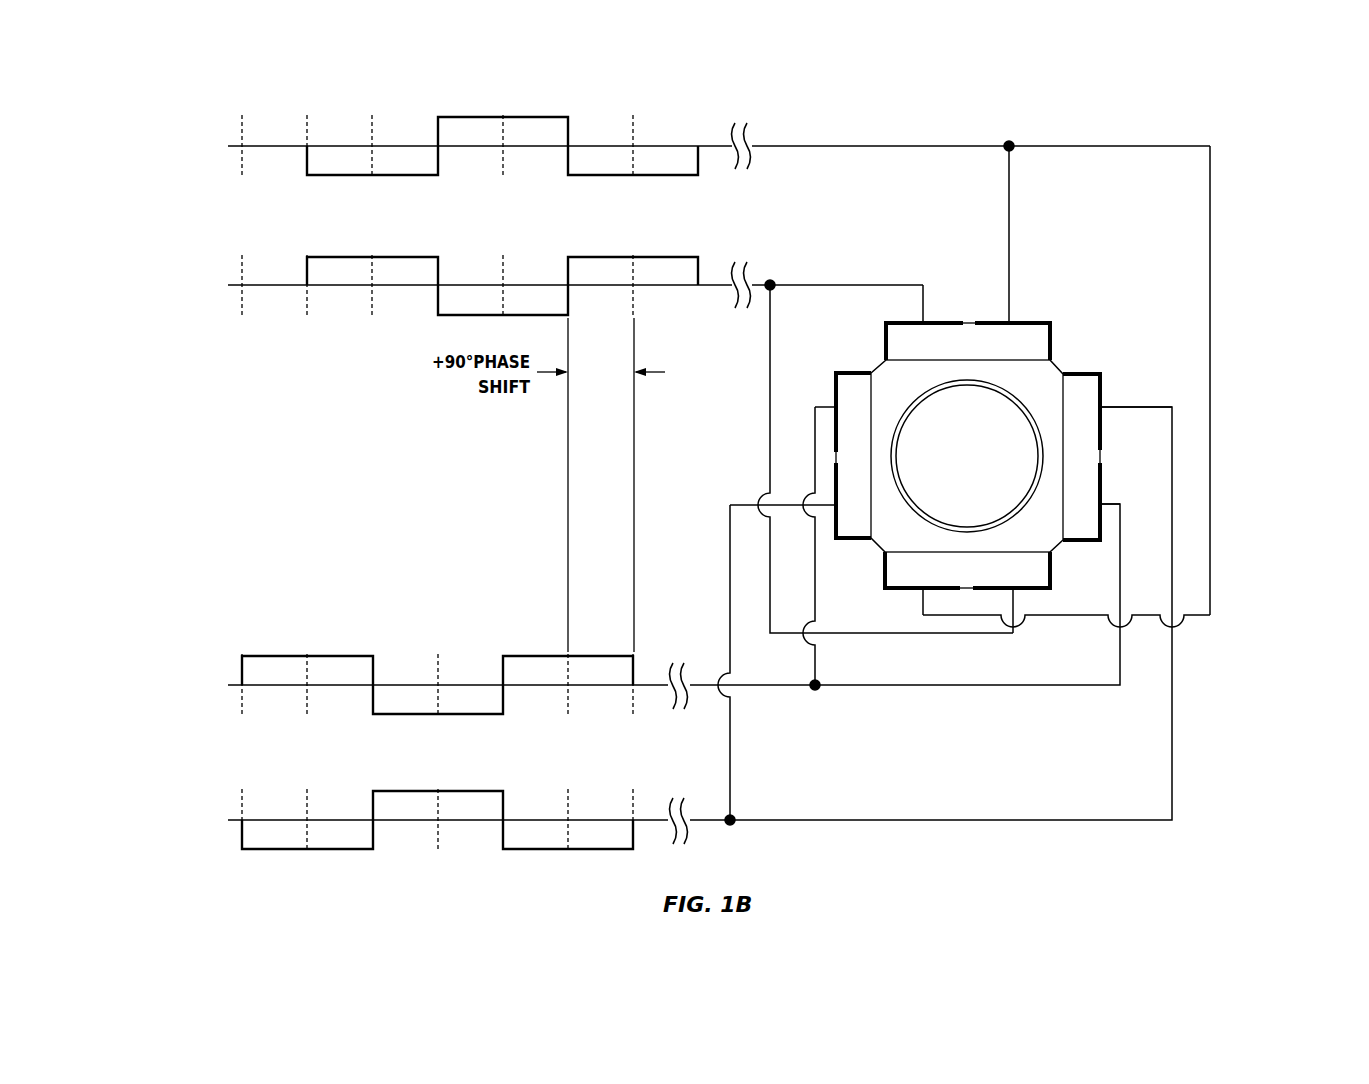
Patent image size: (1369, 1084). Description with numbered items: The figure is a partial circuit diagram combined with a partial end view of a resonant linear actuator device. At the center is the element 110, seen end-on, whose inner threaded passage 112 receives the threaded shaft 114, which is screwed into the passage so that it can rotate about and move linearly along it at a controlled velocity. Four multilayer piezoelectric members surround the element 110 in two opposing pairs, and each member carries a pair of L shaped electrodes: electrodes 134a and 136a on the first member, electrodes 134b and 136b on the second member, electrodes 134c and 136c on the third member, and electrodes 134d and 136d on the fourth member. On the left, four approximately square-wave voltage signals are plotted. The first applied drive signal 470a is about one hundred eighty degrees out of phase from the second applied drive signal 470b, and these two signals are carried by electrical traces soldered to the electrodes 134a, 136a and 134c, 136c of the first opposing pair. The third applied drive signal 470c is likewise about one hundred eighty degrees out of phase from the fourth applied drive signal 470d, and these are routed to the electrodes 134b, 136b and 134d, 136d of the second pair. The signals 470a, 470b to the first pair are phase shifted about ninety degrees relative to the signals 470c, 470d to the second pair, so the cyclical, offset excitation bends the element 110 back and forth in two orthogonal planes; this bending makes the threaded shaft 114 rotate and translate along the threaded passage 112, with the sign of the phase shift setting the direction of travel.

The first applied drive signal 470a is at (477, 117).
The second applied drive signal 470b is at (603, 257).
The third applied drive signal 470c is at (266, 656).
The fourth applied drive signal 470d is at (266, 849).
The L shaped electrode 136a is at (940, 322).
The L shaped electrode 134a is at (1033, 322).
The element 110 is at (1055, 425).
The threaded passage 112 is at (906, 417).
The threaded shaft 114 is at (988, 468).
The L shaped electrode 136b is at (1100, 380).
The L shaped electrode 134b is at (1100, 520).
The L shaped electrode 136c is at (905, 592).
The L shaped electrode 134c is at (1033, 592).
The L shaped electrode 136d is at (836, 391).
The L shaped electrode 134d is at (836, 476).